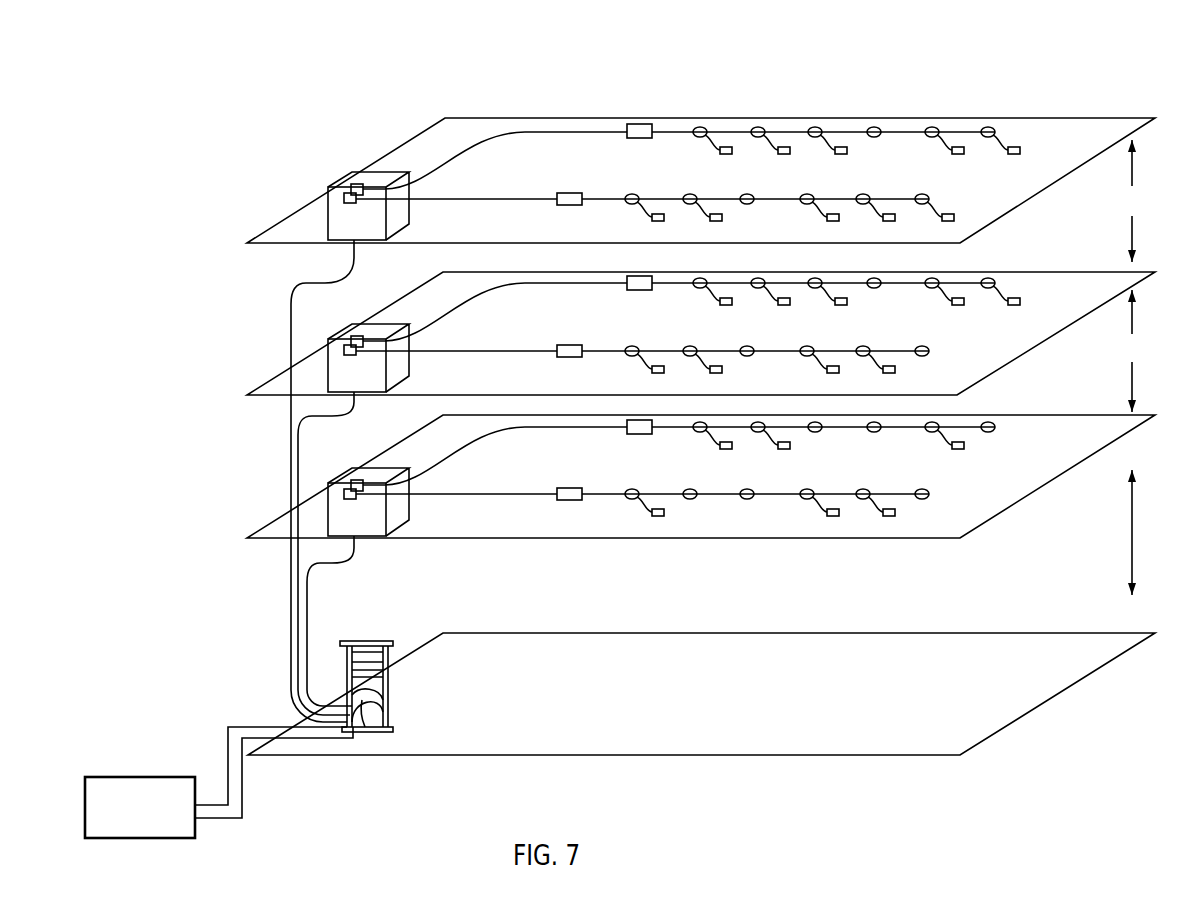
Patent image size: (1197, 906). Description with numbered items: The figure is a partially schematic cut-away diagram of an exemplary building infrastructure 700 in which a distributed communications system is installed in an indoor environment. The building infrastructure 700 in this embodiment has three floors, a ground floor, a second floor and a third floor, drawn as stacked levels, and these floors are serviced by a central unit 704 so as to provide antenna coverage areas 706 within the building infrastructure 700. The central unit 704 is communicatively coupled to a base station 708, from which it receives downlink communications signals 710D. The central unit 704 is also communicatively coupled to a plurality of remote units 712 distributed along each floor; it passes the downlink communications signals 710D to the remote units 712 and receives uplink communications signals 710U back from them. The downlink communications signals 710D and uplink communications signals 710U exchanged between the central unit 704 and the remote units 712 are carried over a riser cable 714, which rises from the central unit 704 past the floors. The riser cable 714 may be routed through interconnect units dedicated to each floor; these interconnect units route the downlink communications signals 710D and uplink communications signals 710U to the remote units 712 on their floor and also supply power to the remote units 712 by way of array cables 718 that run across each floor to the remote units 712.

The building infrastructure 700 is at (680, 47).
The central unit 704 is at (400, 690).
The antenna coverage areas 706 is at (1134, 367).
The base station 708 is at (157, 820).
The downlink communications signals 710D is at (517, 133).
The uplink communications signals 710U is at (233, 722).
The remote units 712 is at (958, 146).
The riser cable 714 is at (288, 630).
The array cables 718 is at (572, 132).